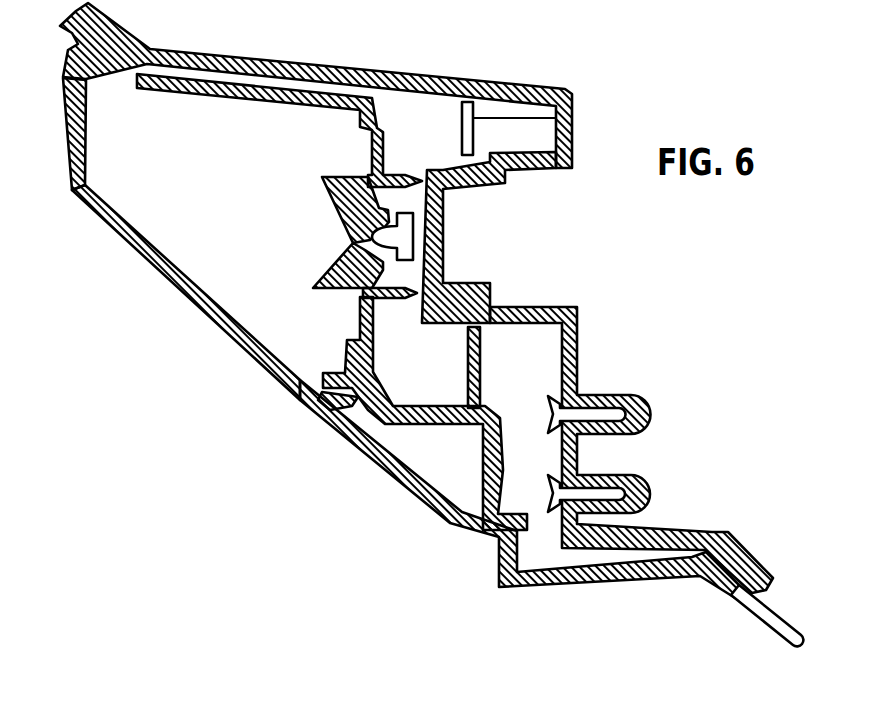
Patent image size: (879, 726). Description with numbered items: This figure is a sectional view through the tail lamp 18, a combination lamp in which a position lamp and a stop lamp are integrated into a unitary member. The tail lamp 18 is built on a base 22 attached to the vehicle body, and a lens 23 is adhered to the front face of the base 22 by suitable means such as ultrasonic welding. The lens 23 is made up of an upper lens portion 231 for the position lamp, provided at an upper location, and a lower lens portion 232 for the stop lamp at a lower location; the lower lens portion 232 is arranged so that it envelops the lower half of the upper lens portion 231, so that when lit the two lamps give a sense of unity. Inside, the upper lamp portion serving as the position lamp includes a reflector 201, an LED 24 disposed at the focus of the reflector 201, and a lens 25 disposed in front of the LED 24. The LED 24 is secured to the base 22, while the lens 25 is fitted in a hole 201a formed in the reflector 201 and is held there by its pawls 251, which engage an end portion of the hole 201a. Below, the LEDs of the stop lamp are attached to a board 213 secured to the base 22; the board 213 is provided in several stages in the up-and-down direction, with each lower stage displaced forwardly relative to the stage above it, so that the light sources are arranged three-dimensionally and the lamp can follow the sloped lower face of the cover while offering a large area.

The tail lamp 18 is at (160, 322).
The reflector 201 is at (197, 97).
The hole 201a is at (372, 300).
The base 22 is at (578, 347).
The board 213 is at (484, 367).
The lens 23 is at (211, 324).
The upper lens portion 231 is at (69, 190).
The lower lens portion 232 is at (340, 438).
The LED 24 is at (444, 228).
The lens 25 is at (323, 193).
The pawls 251 is at (400, 298).